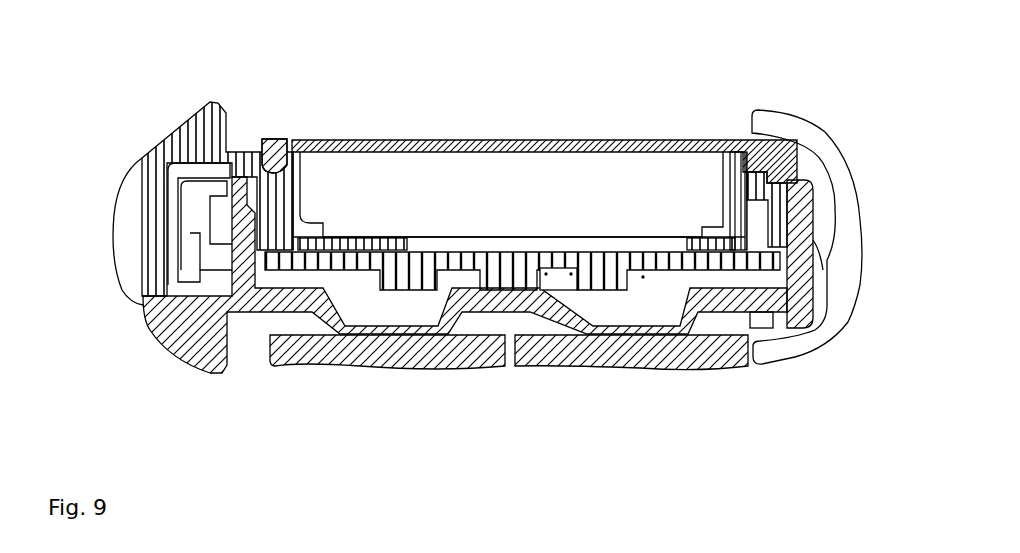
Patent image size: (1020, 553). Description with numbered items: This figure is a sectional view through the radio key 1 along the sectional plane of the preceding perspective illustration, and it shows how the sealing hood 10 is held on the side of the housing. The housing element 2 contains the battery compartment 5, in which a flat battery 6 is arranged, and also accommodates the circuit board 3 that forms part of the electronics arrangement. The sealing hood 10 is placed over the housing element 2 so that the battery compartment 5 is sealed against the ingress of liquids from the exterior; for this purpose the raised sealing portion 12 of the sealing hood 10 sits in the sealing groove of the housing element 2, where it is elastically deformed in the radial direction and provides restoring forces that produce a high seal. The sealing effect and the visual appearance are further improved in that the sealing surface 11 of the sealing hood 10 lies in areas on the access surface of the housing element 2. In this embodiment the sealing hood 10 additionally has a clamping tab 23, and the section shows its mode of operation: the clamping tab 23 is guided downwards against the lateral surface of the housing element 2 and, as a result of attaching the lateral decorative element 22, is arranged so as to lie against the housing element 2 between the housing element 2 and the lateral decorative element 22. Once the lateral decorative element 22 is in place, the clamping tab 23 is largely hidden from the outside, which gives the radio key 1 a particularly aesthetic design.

The radio key 1 is at (85, 128).
The housing element 2 is at (198, 137).
The circuit board 3 is at (602, 262).
The battery compartment 5 is at (310, 230).
The flat battery 6 is at (535, 195).
The sealing hood 10 is at (628, 140).
The sealing surface 11 is at (421, 158).
The raised sealing portion 12 is at (294, 150).
The lateral decorative element 22 is at (848, 322).
The clamping tab 23 is at (838, 217).